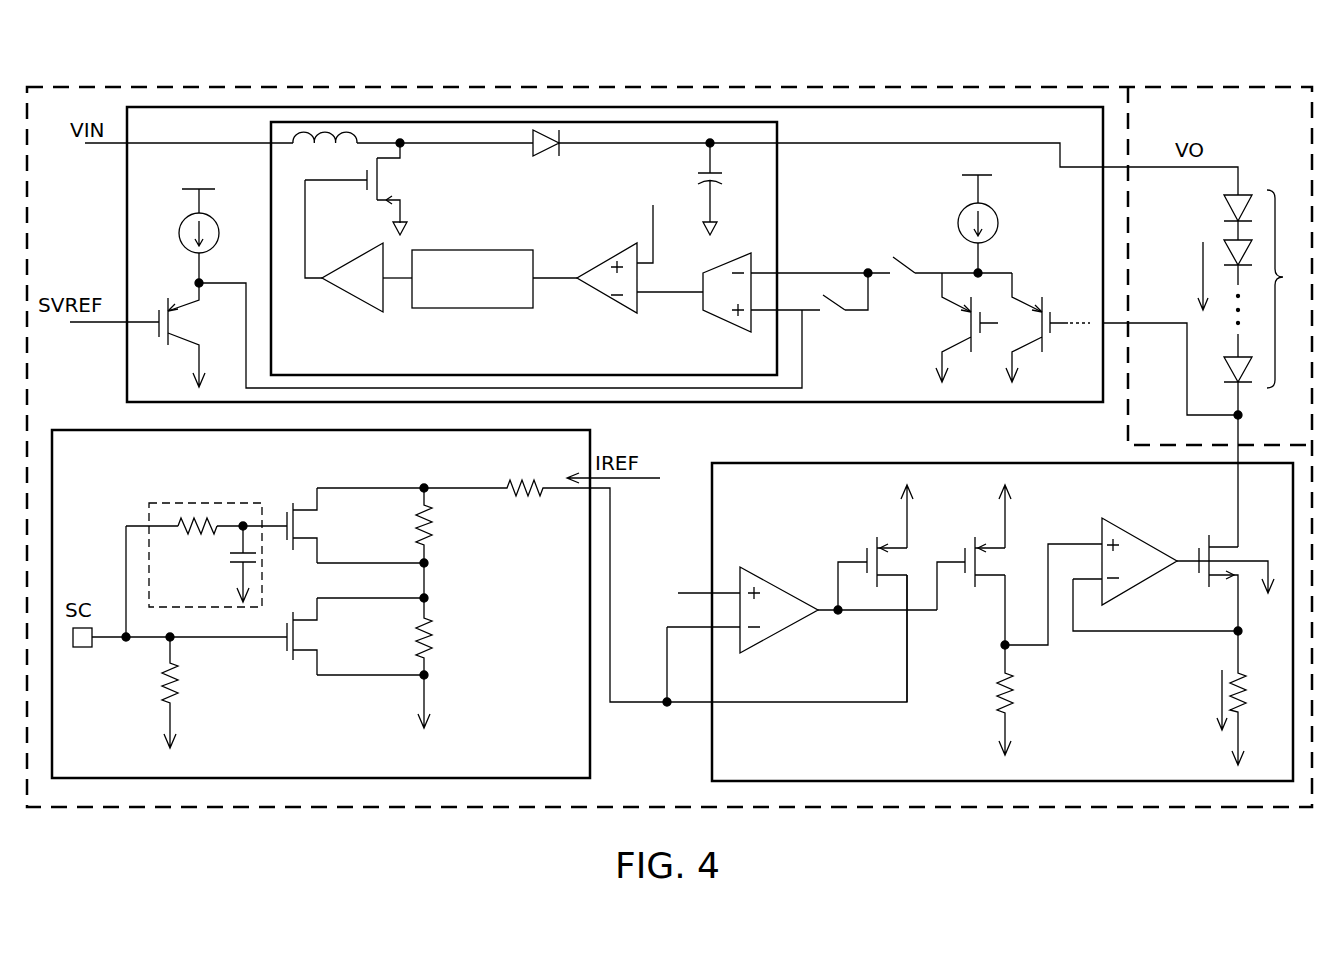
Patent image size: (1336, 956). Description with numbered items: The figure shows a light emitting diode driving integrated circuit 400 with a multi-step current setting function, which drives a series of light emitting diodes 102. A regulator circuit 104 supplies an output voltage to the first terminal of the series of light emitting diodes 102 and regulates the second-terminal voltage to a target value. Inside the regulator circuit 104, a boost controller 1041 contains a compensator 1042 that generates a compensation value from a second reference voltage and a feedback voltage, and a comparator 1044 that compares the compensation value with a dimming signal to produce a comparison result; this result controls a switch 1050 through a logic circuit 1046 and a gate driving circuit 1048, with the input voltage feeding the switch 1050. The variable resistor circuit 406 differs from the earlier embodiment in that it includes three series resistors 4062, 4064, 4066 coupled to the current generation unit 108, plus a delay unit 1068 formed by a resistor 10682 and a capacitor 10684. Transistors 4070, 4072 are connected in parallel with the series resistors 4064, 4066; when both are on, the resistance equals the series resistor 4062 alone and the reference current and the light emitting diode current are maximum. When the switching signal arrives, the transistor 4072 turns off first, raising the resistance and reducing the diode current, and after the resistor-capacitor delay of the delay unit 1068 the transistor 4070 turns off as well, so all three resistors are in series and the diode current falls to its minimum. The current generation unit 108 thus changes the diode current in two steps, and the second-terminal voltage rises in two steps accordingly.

The light emitting diode driving integrated circuit 400 is at (1130, 122).
The regulator circuit 104 is at (835, 102).
The boost controller 1041 is at (779, 180).
The compensator 1042 is at (724, 328).
The comparator 1044 is at (612, 245).
The logic circuit 1046 is at (470, 250).
The gate driving circuit 1048 is at (356, 305).
The switch 1050 is at (404, 178).
The series of light emitting diodes 102 is at (1283, 277).
The variable resistor circuit 406 is at (103, 428).
The delay unit 1068 is at (180, 535).
The resistor 10682 is at (199, 513).
The capacitor 10684 is at (223, 557).
The transistor 4070 is at (310, 527).
The transistor 4072 is at (310, 641).
The series resistor 4064 is at (438, 528).
The series resistor 4066 is at (438, 642).
The series resistor 4062 is at (527, 475).
The current generation unit 108 is at (973, 463).